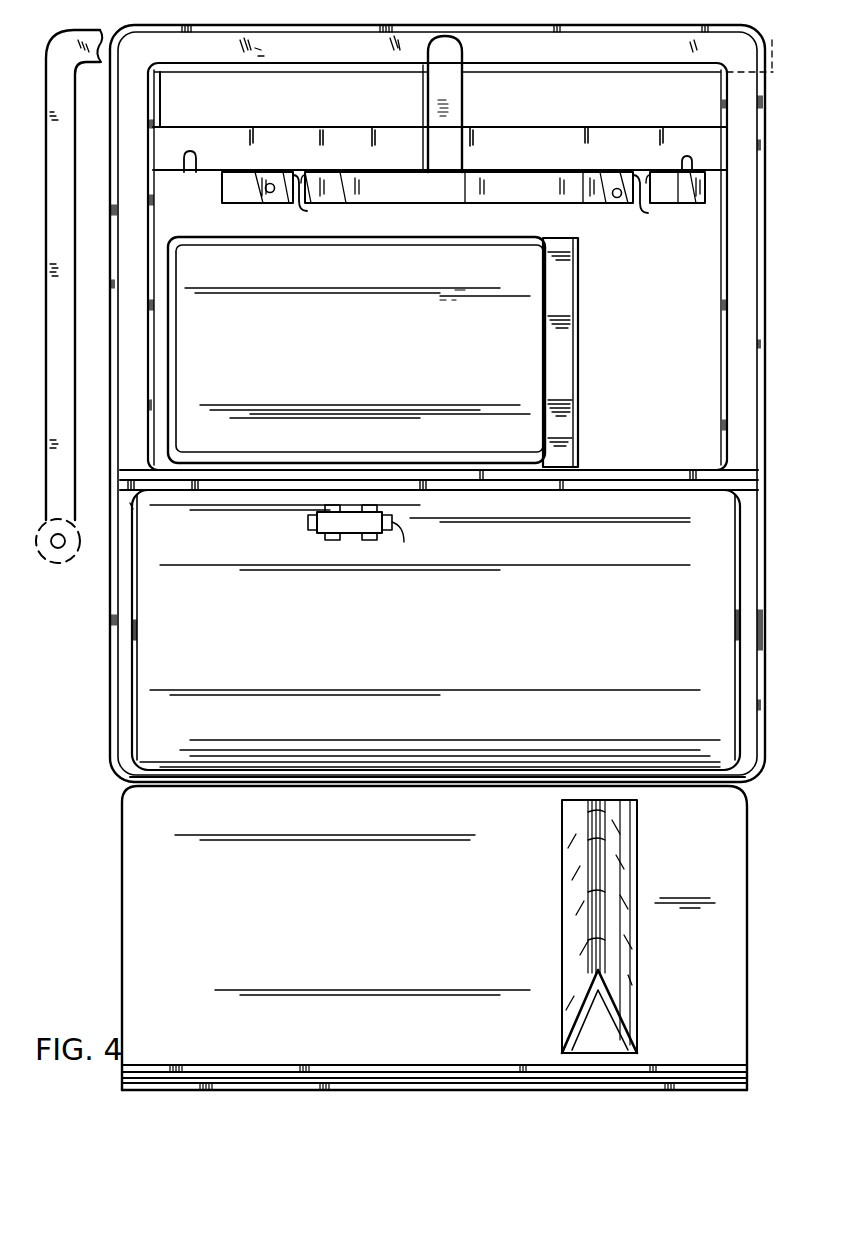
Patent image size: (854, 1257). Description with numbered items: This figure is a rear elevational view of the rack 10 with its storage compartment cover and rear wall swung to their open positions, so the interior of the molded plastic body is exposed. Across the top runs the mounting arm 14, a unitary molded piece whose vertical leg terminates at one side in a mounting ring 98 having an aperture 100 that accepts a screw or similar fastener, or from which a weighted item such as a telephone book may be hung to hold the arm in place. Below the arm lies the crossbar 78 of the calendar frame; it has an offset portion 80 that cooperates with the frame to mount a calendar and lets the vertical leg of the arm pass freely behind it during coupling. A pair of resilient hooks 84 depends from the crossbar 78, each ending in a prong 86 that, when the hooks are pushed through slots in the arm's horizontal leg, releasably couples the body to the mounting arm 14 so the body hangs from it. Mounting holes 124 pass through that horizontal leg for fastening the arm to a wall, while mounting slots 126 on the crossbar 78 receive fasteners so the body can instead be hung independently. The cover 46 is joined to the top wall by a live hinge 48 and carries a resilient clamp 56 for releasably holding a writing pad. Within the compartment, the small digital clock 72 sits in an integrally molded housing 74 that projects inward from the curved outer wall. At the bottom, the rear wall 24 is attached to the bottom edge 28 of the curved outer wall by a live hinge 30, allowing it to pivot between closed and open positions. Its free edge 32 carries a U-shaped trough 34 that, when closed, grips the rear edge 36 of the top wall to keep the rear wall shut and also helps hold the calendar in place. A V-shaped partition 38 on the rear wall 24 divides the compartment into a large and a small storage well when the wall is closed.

The rack 10 is at (394, 19).
The mounting arm 14 is at (76, 30).
The rear wall 24 is at (365, 934).
The bottom edge 28 is at (508, 778).
The live hinge 30 is at (205, 778).
The free edge 32 is at (316, 1090).
The U-shaped trough 34 is at (355, 1075).
The rear edge 36 is at (612, 468).
The V-shaped partition 38 is at (570, 902).
The cover 46 is at (460, 238).
The live hinge 48 is at (322, 462).
The resilient clamp 56 is at (572, 283).
The digital clock 72 is at (353, 535).
The housing 74 is at (392, 522).
The crossbar 78 is at (280, 125).
The offset portion 80 is at (410, 170).
The resilient hooks 84 is at (308, 200).
The prong 86 is at (297, 215).
The mounting ring 98 is at (78, 546).
The aperture 100 is at (57, 548).
The mounting holes 124 is at (268, 192).
The mounting slots 126 is at (184, 170).